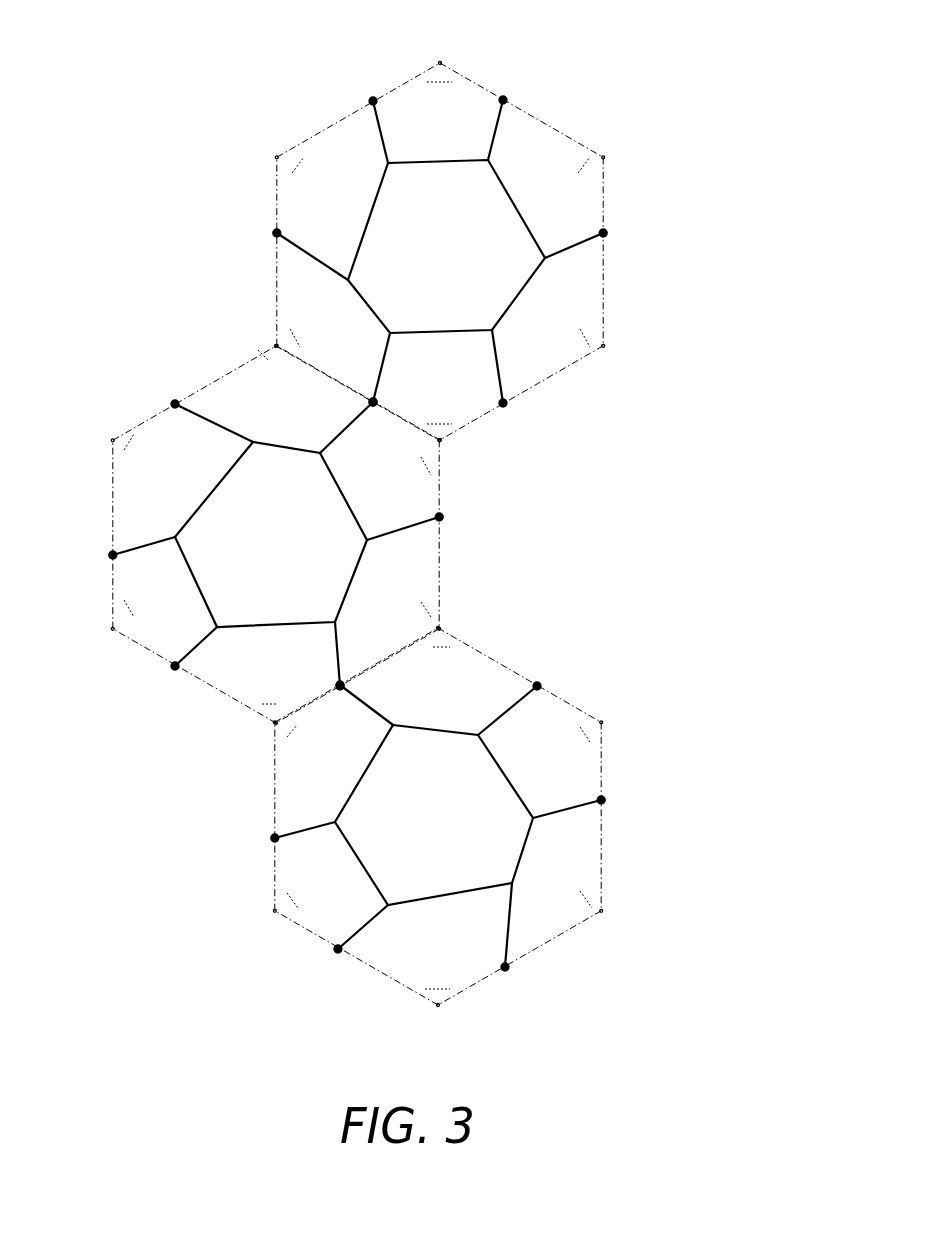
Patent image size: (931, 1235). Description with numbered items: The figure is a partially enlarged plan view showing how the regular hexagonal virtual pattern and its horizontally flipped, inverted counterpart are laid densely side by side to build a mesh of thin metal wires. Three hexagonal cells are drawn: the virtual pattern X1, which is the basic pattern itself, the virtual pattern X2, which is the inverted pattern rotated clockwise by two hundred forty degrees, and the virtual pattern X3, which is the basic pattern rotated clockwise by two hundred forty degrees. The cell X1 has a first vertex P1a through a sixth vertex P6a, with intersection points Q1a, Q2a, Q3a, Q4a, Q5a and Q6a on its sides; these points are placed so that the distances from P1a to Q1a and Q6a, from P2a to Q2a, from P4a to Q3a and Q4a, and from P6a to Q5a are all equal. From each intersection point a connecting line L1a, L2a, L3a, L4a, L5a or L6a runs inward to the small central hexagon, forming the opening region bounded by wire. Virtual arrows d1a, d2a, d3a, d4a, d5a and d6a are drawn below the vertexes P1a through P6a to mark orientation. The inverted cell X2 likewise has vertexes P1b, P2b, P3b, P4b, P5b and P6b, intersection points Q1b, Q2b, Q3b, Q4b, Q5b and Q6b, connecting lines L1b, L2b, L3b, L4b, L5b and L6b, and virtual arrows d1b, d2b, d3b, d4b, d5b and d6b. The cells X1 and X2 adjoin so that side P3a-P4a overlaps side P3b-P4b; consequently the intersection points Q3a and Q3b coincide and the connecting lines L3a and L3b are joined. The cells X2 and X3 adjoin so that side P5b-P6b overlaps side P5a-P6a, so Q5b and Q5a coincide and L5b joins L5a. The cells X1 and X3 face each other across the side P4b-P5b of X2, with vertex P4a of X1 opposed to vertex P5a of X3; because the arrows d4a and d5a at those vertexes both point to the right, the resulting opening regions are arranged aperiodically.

The virtual pattern X1 is at (603, 272).
The virtual pattern X2 is at (440, 572).
The virtual pattern X3 is at (601, 852).
The first vertex P1a is at (440, 64).
The second vertex P2a is at (276, 157).
The third vertex P3a is at (276, 345).
The fourth vertex P4a is at (440, 440).
The fifth vertex P5a is at (604, 343).
The sixth vertex P6a is at (604, 157).
The first vertex P1b is at (112, 629).
The second vertex P2b is at (112, 440).
The third vertex P3b is at (276, 347).
The fourth vertex P4b is at (440, 441).
The fifth vertex P5b is at (439, 628).
The sixth vertex P6b is at (276, 723).
The first intersection point Q1a is at (371, 98).
The second intersection point Q2a is at (276, 233).
The third intersection point Q3a is at (371, 398).
The fourth intersection point Q4a is at (505, 403).
The fifth intersection point Q5a is at (604, 233).
The sixth intersection point Q6a is at (505, 98).
The first intersection point Q1b is at (110, 555).
The second intersection point Q2b is at (174, 402).
The third intersection point Q3b is at (371, 403).
The fourth intersection point Q4b is at (441, 518).
The fifth intersection point Q5b is at (338, 682).
The sixth intersection point Q6b is at (175, 668).
The connecting line L1a is at (382, 134).
The connecting line L2a is at (318, 262).
The connecting line L3a is at (385, 352).
The connecting line L4a is at (496, 345).
The connecting line L5a is at (578, 246).
The connecting line L6a is at (493, 138).
The connecting line L1b is at (150, 547).
The connecting line L2b is at (220, 429).
The connecting line L3b is at (313, 457).
The connecting line L4b is at (387, 538).
The connecting line L5b is at (339, 620).
The connecting line L6b is at (198, 633).
The virtual arrow d1a is at (370, 499).
The virtual arrow d2a is at (373, 573).
The virtual arrow d3a is at (441, 611).
The virtual arrow d4a is at (505, 580).
The virtual arrow d5a is at (507, 492).
The virtual arrow d6a is at (438, 457).
The virtual arrow d1b is at (144, 606).
The virtual arrow d2b is at (144, 453).
The virtual arrow d3b is at (276, 369).
The virtual arrow d4b is at (408, 460).
The virtual arrow d5b is at (410, 606).
The virtual arrow d6b is at (280, 692).